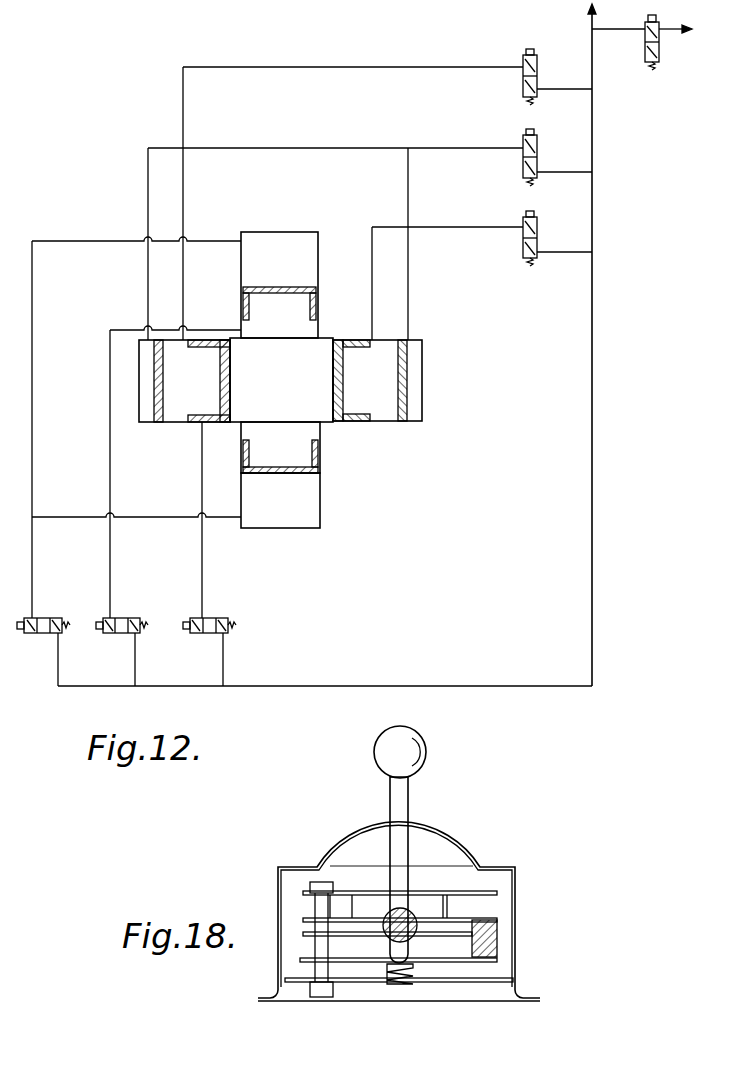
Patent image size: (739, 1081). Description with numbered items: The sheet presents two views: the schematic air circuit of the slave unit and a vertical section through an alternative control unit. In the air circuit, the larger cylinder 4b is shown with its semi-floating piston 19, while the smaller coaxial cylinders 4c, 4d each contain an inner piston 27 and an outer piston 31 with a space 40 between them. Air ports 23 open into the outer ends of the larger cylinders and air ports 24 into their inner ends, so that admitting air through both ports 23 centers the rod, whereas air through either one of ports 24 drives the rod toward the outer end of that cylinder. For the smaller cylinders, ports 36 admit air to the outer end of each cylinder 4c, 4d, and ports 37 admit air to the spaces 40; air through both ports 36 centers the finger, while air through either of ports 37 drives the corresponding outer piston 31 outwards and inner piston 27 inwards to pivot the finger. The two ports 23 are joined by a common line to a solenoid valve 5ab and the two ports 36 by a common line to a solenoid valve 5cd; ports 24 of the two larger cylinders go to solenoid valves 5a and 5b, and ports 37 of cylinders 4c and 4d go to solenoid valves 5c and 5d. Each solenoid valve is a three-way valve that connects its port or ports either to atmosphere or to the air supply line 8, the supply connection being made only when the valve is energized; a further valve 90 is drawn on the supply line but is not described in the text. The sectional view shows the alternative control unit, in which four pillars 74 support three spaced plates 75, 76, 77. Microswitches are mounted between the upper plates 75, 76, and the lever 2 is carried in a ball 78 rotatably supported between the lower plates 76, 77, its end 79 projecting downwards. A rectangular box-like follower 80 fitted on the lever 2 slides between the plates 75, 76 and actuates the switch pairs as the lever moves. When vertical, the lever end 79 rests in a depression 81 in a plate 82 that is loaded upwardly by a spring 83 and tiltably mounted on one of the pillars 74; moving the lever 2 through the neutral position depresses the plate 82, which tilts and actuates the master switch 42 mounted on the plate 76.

In FIG. 12, the air supply line 8 is at (590, 22).
In FIG. 12, the relief valve 90 is at (644, 58).
In FIG. 12, the solenoid valve 5d is at (522, 78).
In FIG. 12, the solenoid valve 5cd is at (522, 163).
In FIG. 12, the solenoid valve 5c is at (522, 245).
In FIG. 12, the solenoid valve 5ab is at (47, 617).
In FIG. 12, the solenoid valve 5a is at (127, 617).
In FIG. 12, the solenoid valve 5b is at (213, 617).
In FIG. 12, the air ports 23 is at (210, 239).
In FIG. 12, the air ports 24 is at (233, 330).
In FIG. 12, the ports 36 is at (148, 298).
In FIG. 12, the ports 37 is at (185, 268).
In FIG. 12, the cylinder 4d is at (143, 423).
In FIG. 12, the cylinder 4c is at (388, 421).
In FIG. 12, the cylinder 4b is at (280, 500).
In FIG. 12, the inner piston 27 is at (229, 373).
In FIG. 12, the spaces 40 is at (281, 319).
In FIG. 12, the outer piston 31 is at (164, 362).
In FIG. 12, the semi-floating piston 19 is at (280, 447).
In FIG. 18, the lever 2 is at (408, 853).
In FIG. 18, the pillars 74 is at (280, 973).
In FIG. 18, the upper plate 75 is at (497, 892).
In FIG. 18, the plate 76 is at (497, 920).
In FIG. 18, the lower plate 77 is at (497, 934).
In FIG. 18, the master switch 42 is at (495, 948).
In FIG. 18, the plate 82 is at (473, 963).
In FIG. 18, the ball 78 is at (410, 912).
In FIG. 18, the lever end 79 is at (407, 960).
In FIG. 18, the follower 80 is at (352, 913).
In FIG. 18, the depression 81 is at (393, 967).
In FIG. 18, the spring 83 is at (322, 965).